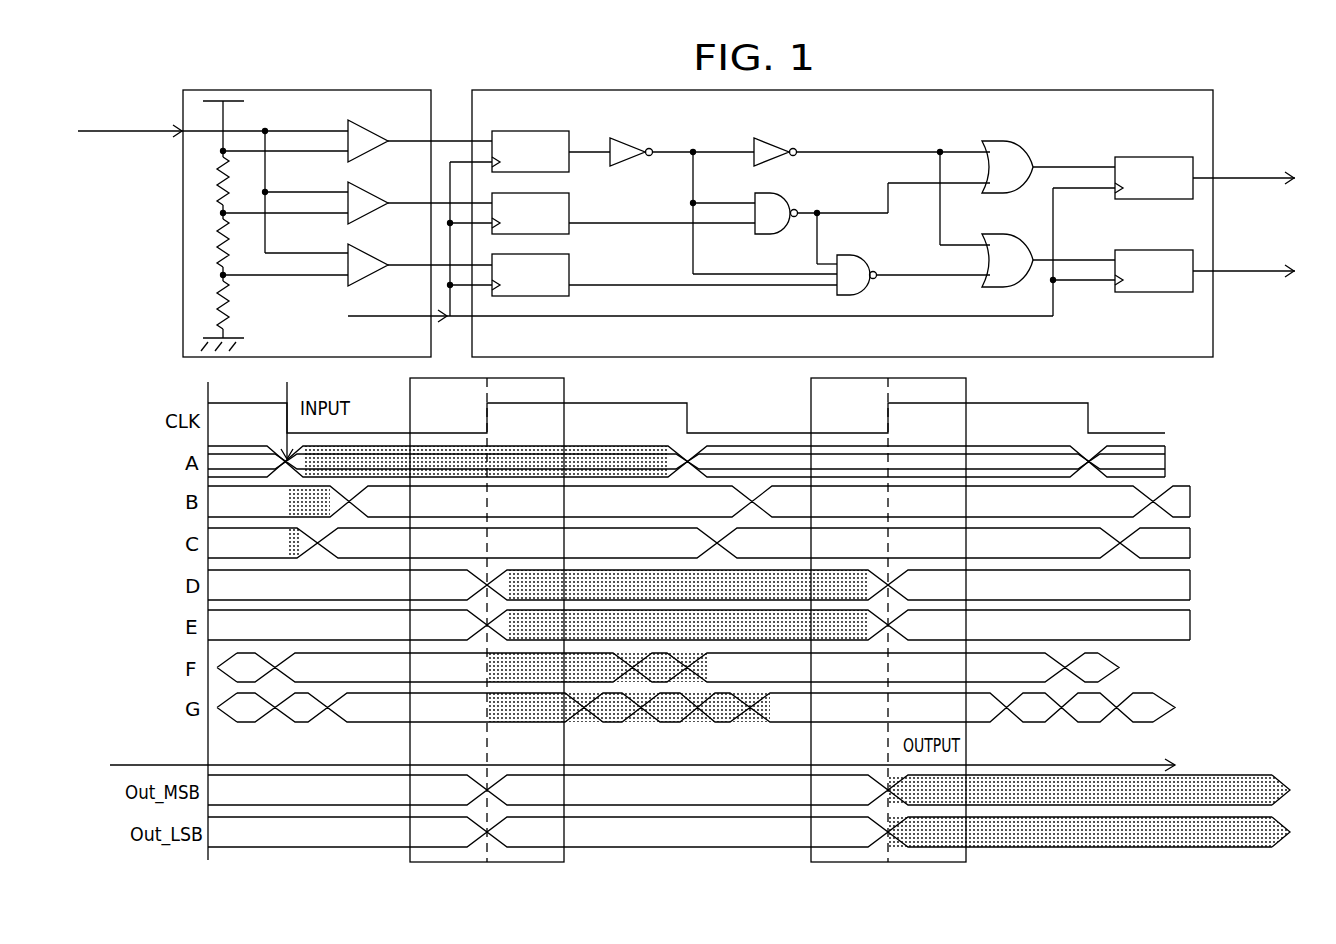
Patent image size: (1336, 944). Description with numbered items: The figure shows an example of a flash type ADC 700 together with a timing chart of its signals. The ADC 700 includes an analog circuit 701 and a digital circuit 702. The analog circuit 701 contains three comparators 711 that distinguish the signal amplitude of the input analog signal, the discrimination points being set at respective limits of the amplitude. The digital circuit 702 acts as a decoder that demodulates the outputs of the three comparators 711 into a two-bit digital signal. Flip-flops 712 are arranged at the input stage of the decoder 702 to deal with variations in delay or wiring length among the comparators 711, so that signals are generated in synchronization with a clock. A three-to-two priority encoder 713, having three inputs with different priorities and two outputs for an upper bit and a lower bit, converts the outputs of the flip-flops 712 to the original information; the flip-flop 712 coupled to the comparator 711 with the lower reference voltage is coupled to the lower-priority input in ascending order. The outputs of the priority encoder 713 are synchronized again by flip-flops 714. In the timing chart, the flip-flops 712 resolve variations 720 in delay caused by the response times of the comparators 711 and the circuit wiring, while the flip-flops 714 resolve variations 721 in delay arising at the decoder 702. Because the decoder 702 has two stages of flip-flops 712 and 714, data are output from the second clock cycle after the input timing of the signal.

The ADC 700 is at (1238, 118).
The analog circuit 701 is at (183, 262).
The digital circuit 702 is at (1214, 335).
The comparator 711 is at (356, 294).
The flip-flop 712 is at (541, 120).
The priority encoder 713 is at (936, 137).
The flip-flop 714 is at (1150, 148).
The variations in delay 720 is at (339, 542).
The variations in delay 721 is at (699, 694).